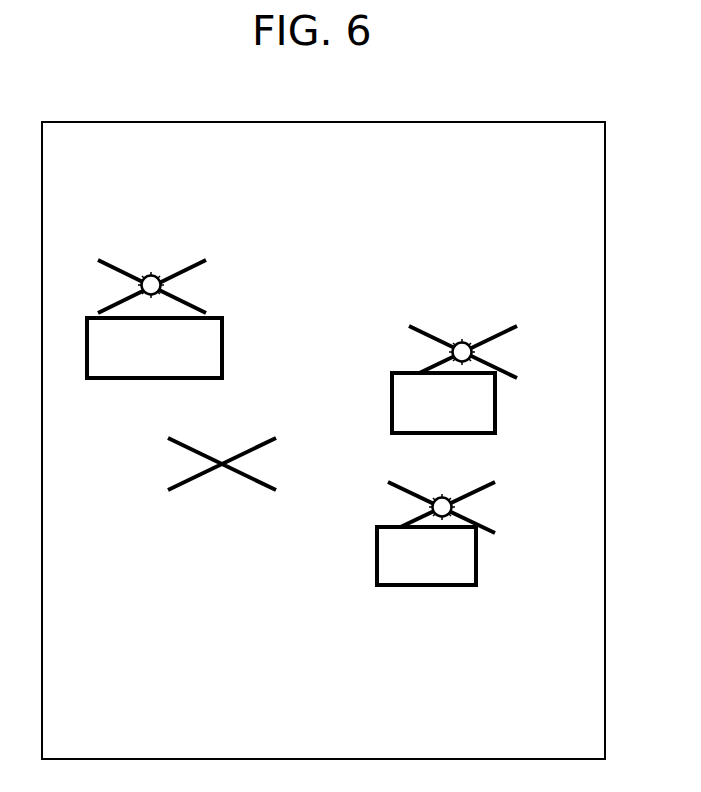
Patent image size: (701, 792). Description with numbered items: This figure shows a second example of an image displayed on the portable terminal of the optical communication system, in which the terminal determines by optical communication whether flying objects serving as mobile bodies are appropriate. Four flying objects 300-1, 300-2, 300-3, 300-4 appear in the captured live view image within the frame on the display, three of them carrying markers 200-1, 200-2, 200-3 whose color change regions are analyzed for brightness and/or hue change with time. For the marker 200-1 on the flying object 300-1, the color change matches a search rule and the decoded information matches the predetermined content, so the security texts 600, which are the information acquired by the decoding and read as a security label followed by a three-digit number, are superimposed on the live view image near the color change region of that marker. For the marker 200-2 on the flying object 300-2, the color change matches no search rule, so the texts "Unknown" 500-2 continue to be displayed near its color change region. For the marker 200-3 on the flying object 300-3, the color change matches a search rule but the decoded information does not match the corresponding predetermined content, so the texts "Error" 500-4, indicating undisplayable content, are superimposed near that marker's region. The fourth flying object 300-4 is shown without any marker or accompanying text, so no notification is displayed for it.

The flying object 300-1 is at (113, 265).
The marker 200-1 is at (165, 285).
The texts "SECURITY 389" 600 is at (222, 355).
The flying object 300-4 is at (183, 443).
The flying object 300-2 is at (423, 332).
The marker 200-2 is at (475, 350).
The texts "Unknown" 500-2 is at (495, 395).
The flying object 300-3 is at (400, 488).
The marker 200-3 is at (455, 507).
The texts "Error" 500-4 is at (477, 550).